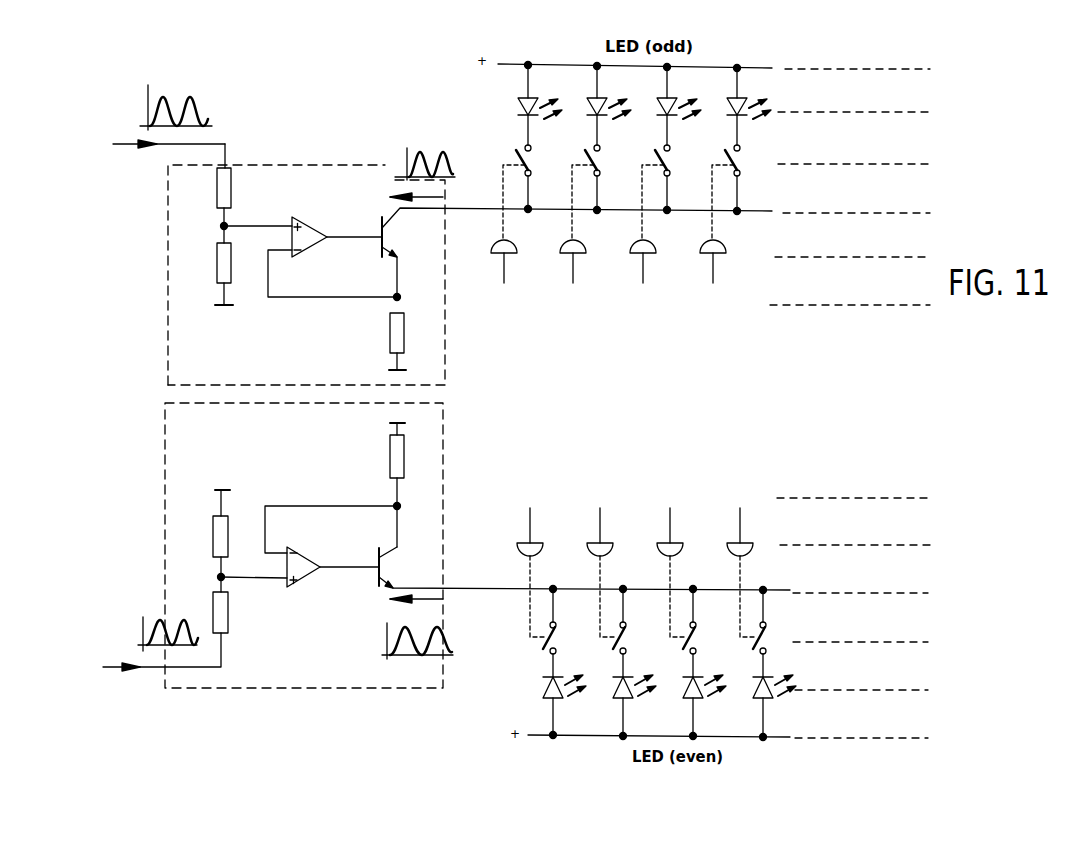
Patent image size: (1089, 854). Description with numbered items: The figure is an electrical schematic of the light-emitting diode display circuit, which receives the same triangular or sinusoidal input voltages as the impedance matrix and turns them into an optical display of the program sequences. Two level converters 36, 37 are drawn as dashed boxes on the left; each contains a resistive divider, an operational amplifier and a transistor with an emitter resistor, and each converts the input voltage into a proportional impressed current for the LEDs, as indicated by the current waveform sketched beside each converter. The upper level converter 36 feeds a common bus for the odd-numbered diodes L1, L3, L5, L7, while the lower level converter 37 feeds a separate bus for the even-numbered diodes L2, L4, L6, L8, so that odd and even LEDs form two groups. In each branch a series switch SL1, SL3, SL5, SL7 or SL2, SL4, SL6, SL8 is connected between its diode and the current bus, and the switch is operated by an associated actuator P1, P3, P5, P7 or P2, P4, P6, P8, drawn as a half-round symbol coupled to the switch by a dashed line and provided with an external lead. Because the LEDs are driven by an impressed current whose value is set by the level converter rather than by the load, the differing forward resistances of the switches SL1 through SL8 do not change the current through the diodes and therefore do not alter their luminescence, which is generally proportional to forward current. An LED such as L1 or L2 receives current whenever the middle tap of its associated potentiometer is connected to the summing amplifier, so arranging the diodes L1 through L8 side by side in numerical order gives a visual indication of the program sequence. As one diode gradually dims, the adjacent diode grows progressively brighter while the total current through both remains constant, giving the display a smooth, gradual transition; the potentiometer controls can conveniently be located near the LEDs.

The level converter 36 is at (433, 358).
The level converter 37 is at (355, 672).
The light-emitting diode L1 is at (528, 104).
The light-emitting diode L3 is at (597, 105).
The light-emitting diode L5 is at (667, 105).
The light-emitting diode L7 is at (737, 106).
The light-emitting diode L2 is at (548, 705).
The light-emitting diode L4 is at (619, 705).
The light-emitting diode L6 is at (690, 705).
The light-emitting diode L8 is at (761, 706).
The switch SL1 is at (506, 191).
The switch SL3 is at (575, 191).
The switch SL5 is at (645, 191).
The switch SL7 is at (715, 191).
The switch SL2 is at (556, 616).
The switch SL4 is at (627, 616).
The switch SL6 is at (697, 616).
The switch SL8 is at (768, 616).
The position sensor P1 is at (504, 279).
The position sensor P3 is at (573, 279).
The position sensor P5 is at (643, 279).
The position sensor P7 is at (713, 279).
The position sensor P2 is at (530, 518).
The position sensor P4 is at (600, 518).
The position sensor P6 is at (670, 518).
The position sensor P8 is at (741, 518).